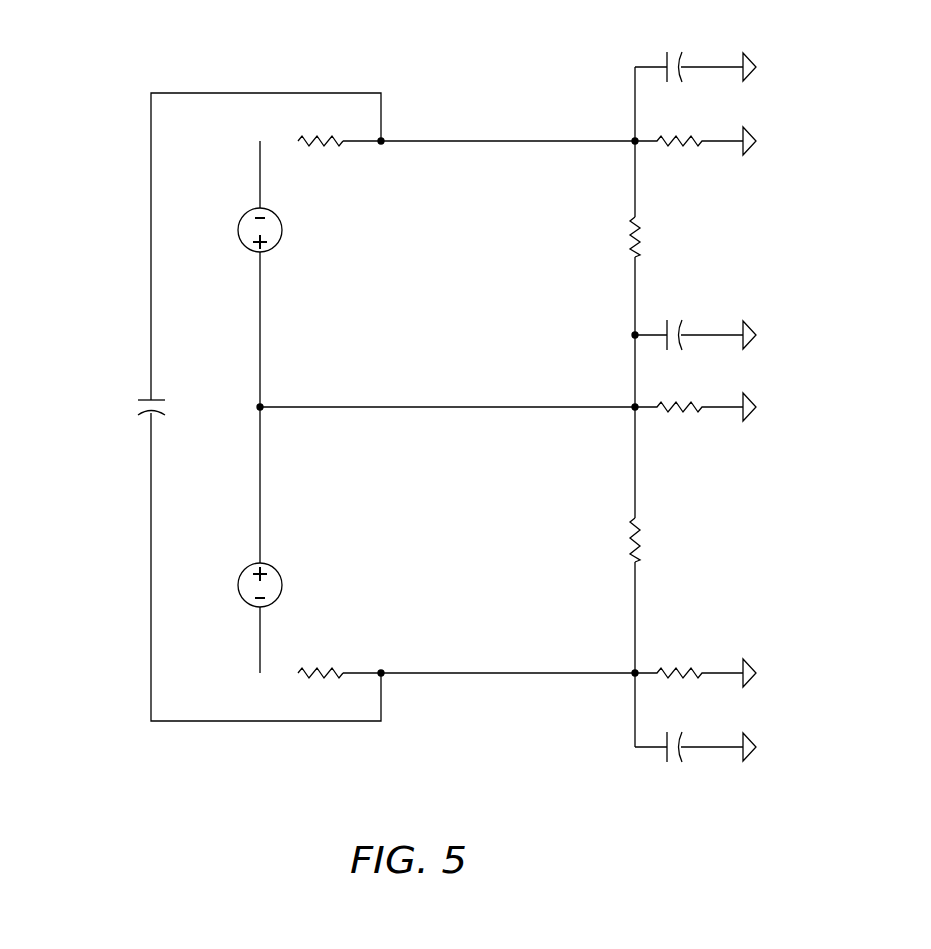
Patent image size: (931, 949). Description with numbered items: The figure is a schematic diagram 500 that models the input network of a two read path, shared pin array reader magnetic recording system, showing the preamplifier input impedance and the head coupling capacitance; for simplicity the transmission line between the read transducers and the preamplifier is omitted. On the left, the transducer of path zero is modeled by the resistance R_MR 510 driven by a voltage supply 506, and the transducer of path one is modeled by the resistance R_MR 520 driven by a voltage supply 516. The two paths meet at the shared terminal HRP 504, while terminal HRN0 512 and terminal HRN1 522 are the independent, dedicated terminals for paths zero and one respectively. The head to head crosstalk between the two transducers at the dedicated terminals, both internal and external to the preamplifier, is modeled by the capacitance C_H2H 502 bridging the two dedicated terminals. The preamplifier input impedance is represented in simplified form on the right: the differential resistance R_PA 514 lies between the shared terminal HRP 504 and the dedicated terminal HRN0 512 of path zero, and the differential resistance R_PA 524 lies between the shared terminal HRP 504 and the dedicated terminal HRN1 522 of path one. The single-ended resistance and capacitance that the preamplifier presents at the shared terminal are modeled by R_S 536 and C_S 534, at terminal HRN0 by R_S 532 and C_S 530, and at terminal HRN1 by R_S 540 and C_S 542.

The schematic diagram 500 is at (132, 52).
The head to head crosstalk capacitance C_H2H 502 is at (148, 399).
The shared terminal HRP 504 is at (503, 409).
The voltage supply 506 is at (243, 217).
The transducer resistance R_MR 510 is at (327, 147).
The terminal HRN0 512 is at (505, 142).
The differential resistance R_PA 514 is at (632, 229).
The voltage supply 516 is at (243, 572).
The transducer resistance R_MR 520 is at (324, 668).
The terminal HRN1 522 is at (505, 675).
The differential resistance R_PA 524 is at (632, 530).
The single-ended capacitance C_S 530 is at (664, 57).
The single-ended resistance R_S 532 is at (683, 146).
The single-ended capacitance C_S 534 is at (664, 326).
The single-ended resistance R_S 536 is at (684, 412).
The single-ended resistance R_S 540 is at (684, 668).
The single-ended capacitance C_S 542 is at (664, 758).